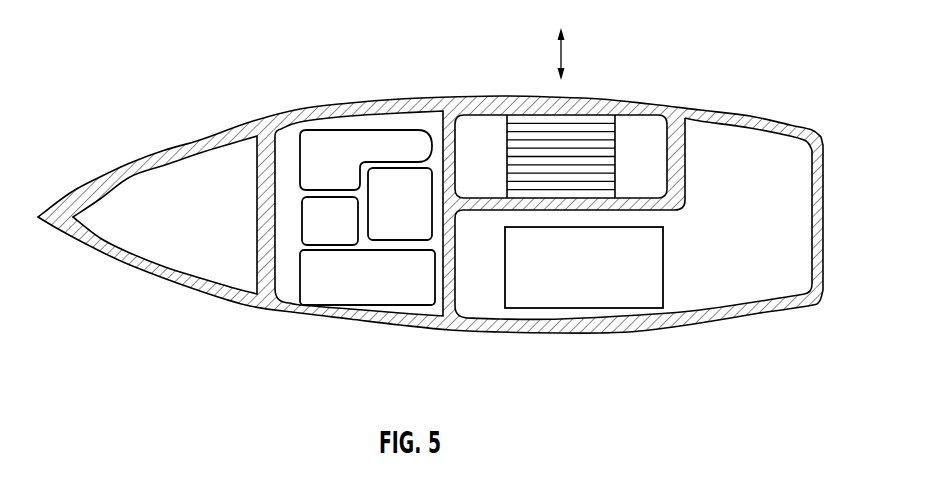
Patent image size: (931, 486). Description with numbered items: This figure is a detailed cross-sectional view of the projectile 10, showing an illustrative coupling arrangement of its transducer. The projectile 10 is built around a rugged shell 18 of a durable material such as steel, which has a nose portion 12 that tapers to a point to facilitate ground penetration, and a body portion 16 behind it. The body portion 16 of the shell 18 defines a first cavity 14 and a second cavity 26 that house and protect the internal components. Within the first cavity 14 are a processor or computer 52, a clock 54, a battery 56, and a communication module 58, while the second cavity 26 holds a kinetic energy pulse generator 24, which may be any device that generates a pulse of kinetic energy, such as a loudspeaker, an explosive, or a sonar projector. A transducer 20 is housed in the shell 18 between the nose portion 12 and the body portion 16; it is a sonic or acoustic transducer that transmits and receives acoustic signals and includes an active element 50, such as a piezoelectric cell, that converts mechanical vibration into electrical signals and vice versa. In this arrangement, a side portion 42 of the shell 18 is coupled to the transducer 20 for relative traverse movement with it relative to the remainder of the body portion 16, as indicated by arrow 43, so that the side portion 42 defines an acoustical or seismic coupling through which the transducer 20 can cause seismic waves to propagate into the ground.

The projectile 10 is at (114, 128).
The nose portion 12 is at (185, 140).
The first cavity 14 is at (420, 312).
The body portion 16 is at (497, 330).
The shell 18 is at (723, 122).
The transducer 20 is at (597, 160).
The kinetic energy pulse generator 24 is at (618, 302).
The second cavity 26 is at (720, 295).
The side portion 42 is at (575, 98).
The arrow 43 is at (558, 49).
The active element 50 is at (605, 178).
The computer 52 is at (412, 142).
The clock 54 is at (297, 204).
The battery 56 is at (425, 177).
The communication module 58 is at (322, 298).